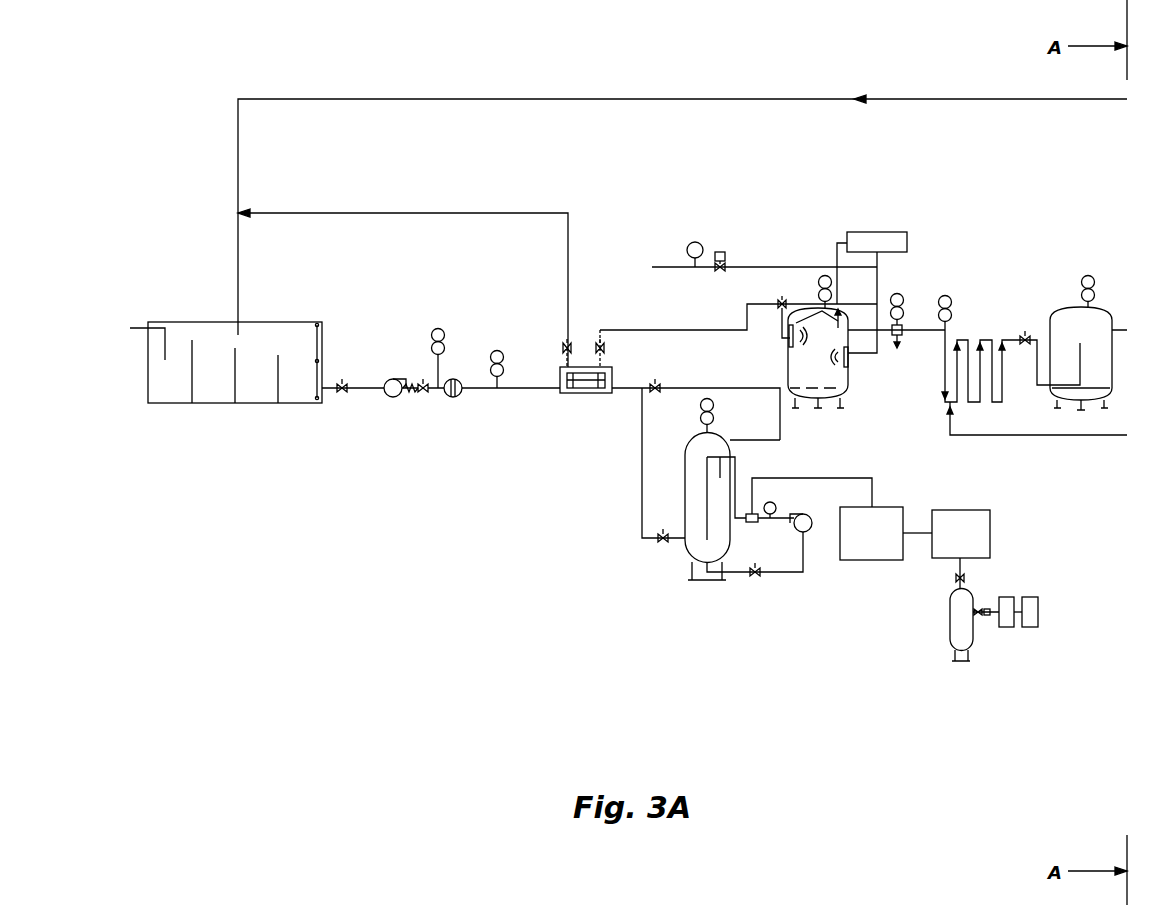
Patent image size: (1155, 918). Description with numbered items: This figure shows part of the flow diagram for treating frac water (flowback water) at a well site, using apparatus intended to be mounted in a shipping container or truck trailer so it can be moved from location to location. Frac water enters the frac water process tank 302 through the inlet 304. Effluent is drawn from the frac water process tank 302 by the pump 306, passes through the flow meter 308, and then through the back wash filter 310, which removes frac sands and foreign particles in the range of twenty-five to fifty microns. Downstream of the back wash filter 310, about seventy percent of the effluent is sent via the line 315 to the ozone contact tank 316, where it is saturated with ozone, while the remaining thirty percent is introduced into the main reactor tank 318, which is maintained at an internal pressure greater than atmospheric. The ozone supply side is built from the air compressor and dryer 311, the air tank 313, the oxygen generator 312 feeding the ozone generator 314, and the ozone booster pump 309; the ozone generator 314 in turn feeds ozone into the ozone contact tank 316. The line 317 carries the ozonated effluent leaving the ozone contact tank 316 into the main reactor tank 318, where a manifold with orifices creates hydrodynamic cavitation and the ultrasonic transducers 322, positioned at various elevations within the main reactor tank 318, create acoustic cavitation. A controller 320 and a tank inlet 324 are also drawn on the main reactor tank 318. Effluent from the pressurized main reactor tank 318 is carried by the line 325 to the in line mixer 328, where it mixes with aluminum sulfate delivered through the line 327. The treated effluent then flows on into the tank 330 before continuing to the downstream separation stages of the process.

The frac water process tank 302 is at (178, 403).
The inlet 304 is at (146, 328).
The pump 306 is at (394, 379).
The flow meter 308 is at (453, 398).
The ozone booster pump 309 is at (804, 514).
The back wash filter 310 is at (585, 393).
The air compressor and dryer 311 is at (1010, 597).
The oxygen generator 312 is at (960, 510).
The air tank 313 is at (953, 607).
The ozone generator 314 is at (890, 507).
The line 315 is at (641, 468).
The ozone contact tank 316 is at (690, 545).
The line 317 is at (781, 434).
The main reactor tank 318 is at (850, 386).
The controller 320 is at (865, 232).
The ultrasonic transducers 322 is at (850, 355).
The tank inlet 324 is at (844, 322).
The line 325 is at (904, 320).
The line 327 is at (1097, 438).
The in line mixer 328 is at (969, 340).
The tank 330 is at (1077, 318).